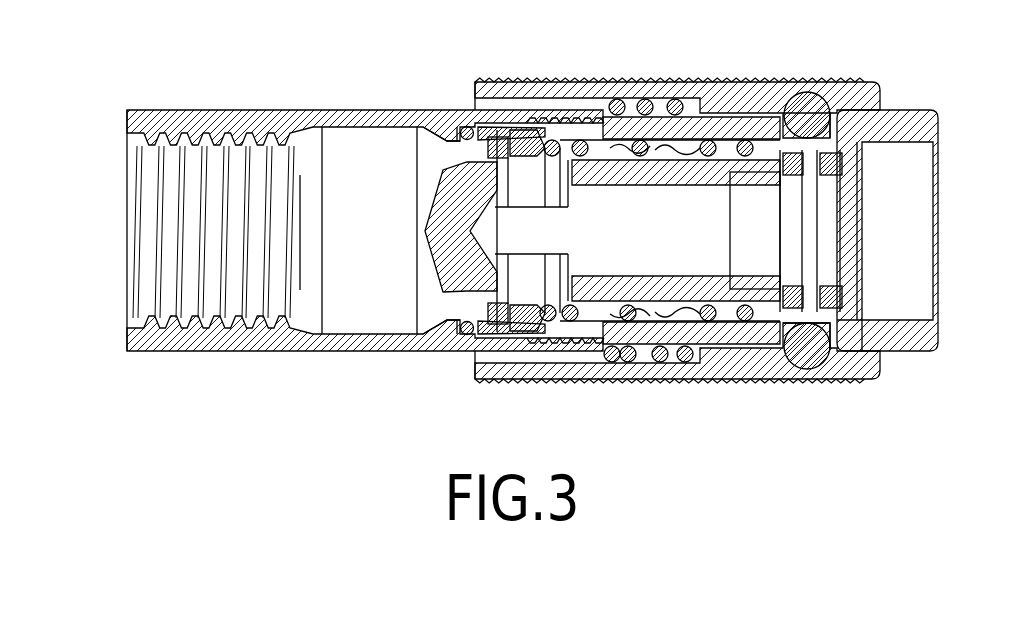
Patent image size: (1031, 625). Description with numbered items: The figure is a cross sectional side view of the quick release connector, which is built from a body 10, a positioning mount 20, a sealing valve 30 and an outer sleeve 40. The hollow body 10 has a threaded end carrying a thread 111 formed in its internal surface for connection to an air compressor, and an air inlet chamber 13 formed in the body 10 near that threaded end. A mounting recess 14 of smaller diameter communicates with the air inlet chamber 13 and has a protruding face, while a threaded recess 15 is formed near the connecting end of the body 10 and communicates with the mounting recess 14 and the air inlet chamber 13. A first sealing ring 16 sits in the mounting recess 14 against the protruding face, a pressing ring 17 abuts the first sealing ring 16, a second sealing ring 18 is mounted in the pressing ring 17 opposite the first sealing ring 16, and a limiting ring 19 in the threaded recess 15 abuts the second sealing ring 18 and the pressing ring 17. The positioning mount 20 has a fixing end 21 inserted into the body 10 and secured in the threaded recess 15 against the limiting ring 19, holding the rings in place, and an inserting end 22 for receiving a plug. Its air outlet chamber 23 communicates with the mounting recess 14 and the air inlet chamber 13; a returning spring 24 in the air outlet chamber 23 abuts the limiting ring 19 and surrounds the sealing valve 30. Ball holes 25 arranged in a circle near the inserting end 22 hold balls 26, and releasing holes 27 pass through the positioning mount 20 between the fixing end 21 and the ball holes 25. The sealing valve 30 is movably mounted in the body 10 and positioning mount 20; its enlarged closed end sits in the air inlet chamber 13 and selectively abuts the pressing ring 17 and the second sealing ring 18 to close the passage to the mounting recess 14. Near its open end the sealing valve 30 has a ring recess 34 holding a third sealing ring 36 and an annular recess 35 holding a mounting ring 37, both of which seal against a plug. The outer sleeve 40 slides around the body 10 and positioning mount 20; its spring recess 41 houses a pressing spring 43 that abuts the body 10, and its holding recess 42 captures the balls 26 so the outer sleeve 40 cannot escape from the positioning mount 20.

The body 10 is at (371, 104).
The sealing valve 30 is at (127, 123).
The thread 111 is at (127, 253).
The air inlet chamber 13 is at (353, 334).
The mounting recess 14 is at (453, 332).
The threaded recess 15 is at (576, 338).
The first sealing ring 16 is at (463, 126).
The pressing ring 17 is at (505, 136).
The second sealing ring 18 is at (500, 334).
The limiting ring 19 is at (532, 332).
The fixing end 21 is at (602, 125).
The positioning mount 20 is at (930, 110).
The inserting end 22 is at (937, 322).
The air outlet chamber 23 is at (706, 320).
The returning spring 24 is at (672, 322).
The ball holes 25 is at (816, 352).
The balls 26 is at (795, 346).
The releasing holes 27 is at (682, 163).
The ring recess 34 is at (790, 258).
The annular recess 35 is at (836, 262).
The third sealing ring 36 is at (779, 158).
The mounting ring 37 is at (840, 165).
The outer sleeve 40 is at (620, 82).
The spring recess 41 is at (548, 104).
The holding recess 42 is at (824, 95).
The pressing spring 43 is at (628, 363).